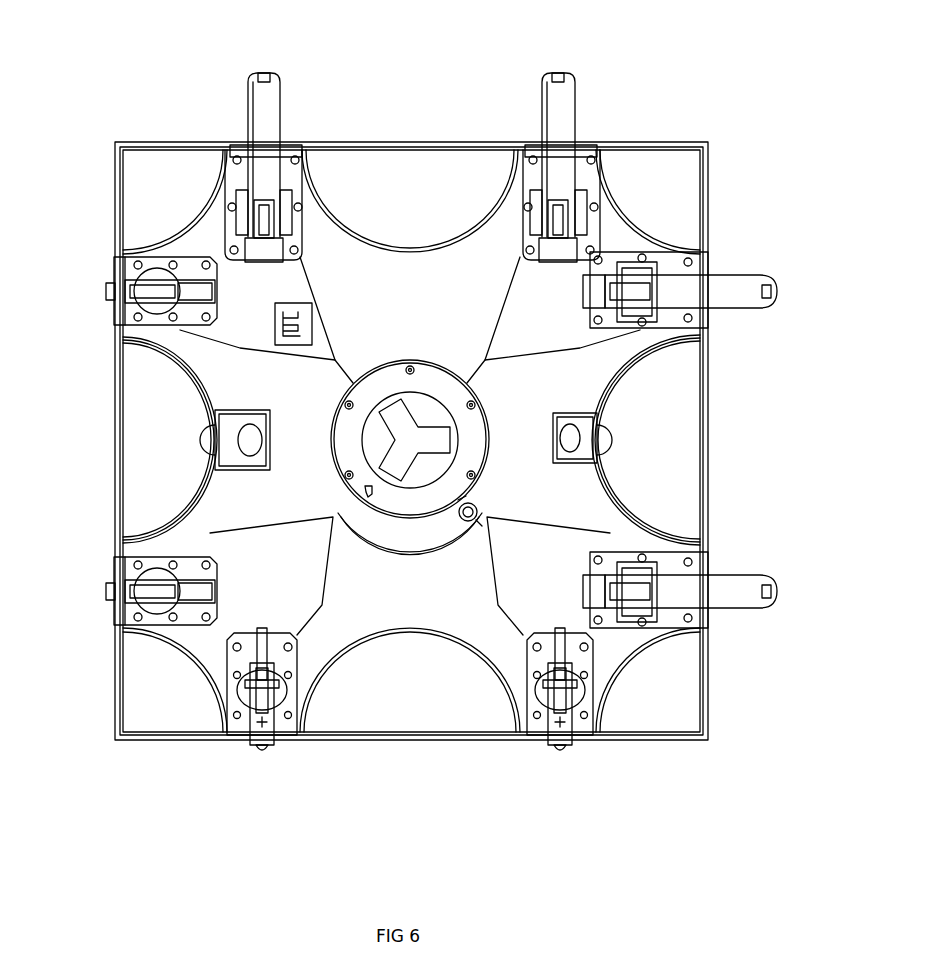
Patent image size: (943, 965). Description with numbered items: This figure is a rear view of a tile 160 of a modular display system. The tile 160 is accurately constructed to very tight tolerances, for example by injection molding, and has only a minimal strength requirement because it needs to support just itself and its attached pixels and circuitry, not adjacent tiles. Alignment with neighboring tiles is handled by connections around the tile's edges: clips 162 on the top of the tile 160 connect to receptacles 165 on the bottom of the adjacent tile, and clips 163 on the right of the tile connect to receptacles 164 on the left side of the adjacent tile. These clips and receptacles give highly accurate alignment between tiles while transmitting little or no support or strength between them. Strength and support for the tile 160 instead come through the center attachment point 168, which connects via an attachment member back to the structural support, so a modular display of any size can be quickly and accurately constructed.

The tile 160 is at (728, 678).
The clips 162 is at (270, 117).
The clips 163 is at (735, 285).
The receptacles 164 is at (118, 268).
The receptacles 165 is at (283, 740).
The center attachment point 168 is at (455, 445).